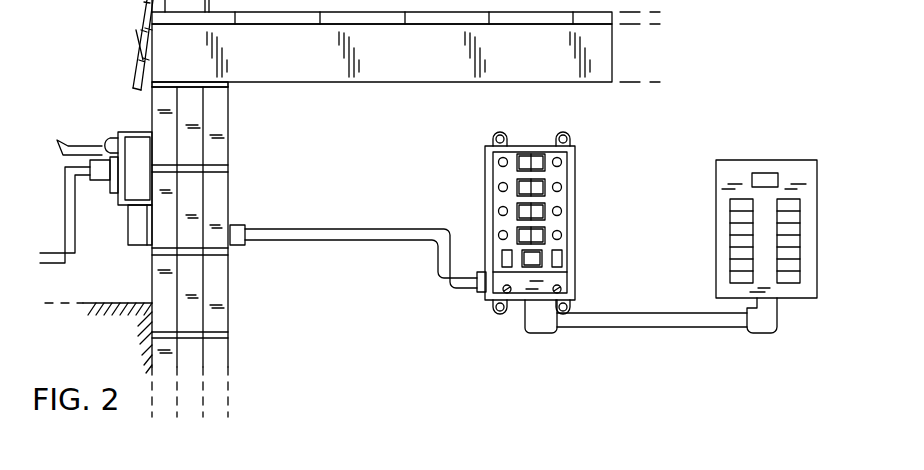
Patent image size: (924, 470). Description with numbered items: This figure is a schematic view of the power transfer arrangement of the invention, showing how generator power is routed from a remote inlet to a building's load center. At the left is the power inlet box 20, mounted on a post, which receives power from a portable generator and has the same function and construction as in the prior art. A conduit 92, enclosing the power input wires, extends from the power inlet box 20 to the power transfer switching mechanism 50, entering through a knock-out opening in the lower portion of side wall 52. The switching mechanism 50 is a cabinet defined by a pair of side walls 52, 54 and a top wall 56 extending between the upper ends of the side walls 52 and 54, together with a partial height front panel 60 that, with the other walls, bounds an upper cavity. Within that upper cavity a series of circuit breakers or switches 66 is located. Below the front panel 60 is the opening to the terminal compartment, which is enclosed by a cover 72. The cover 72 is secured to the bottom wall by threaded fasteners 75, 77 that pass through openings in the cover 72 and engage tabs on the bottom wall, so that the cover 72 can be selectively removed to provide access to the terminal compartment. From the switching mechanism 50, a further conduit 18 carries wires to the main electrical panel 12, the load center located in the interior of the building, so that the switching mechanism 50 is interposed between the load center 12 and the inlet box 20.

The main electrical panel 12 is at (762, 153).
The conduit 18 is at (590, 320).
The power inlet box 20 is at (110, 112).
The power transfer switching mechanism 50 is at (604, 133).
The side wall 52 is at (485, 162).
The side wall 54 is at (577, 162).
The top wall 56 is at (532, 150).
The front panel 60 is at (563, 188).
The circuit breakers 66 is at (518, 208).
The cover 72 is at (565, 275).
The threaded fastener 75 is at (507, 293).
The threaded fastener 77 is at (562, 289).
The conduit 92 is at (317, 229).